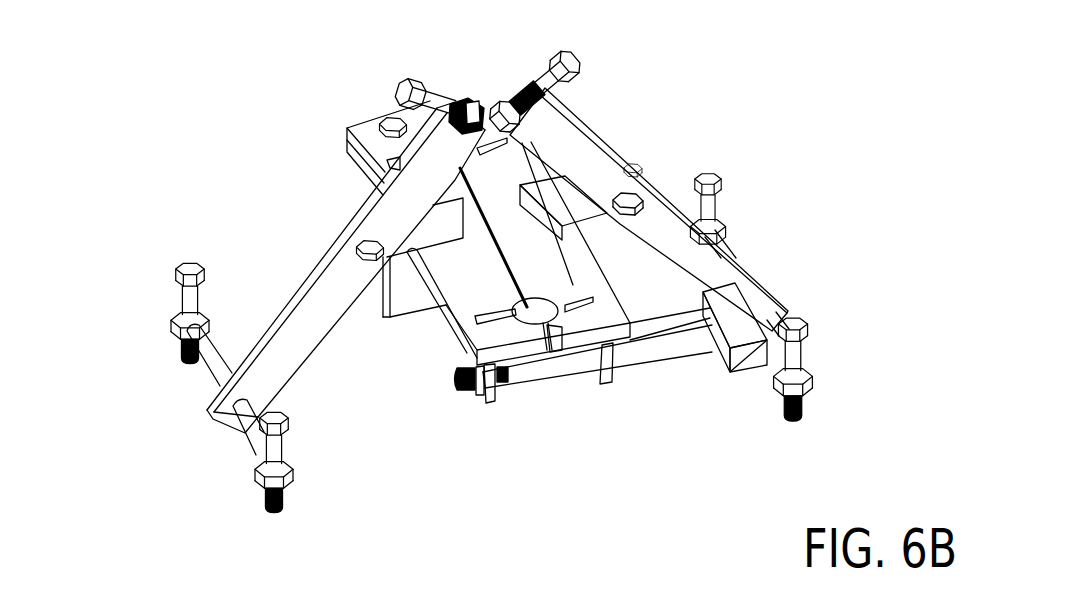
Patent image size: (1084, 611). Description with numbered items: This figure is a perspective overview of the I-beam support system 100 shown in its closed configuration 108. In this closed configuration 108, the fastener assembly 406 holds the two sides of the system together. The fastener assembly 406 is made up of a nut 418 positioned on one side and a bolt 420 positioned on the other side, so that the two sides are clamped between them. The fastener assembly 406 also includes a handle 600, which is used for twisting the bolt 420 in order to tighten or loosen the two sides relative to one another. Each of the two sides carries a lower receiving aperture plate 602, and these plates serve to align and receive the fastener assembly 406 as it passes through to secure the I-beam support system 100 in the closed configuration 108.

The I-beam support system 100 is at (258, 71).
The closed configuration 108 is at (525, 291).
The fastener assembly 406 is at (687, 368).
The nut 418 is at (477, 397).
The bolt 420 is at (539, 372).
The handle 600 is at (743, 293).
The lower receiving aperture plate 602 is at (602, 384).